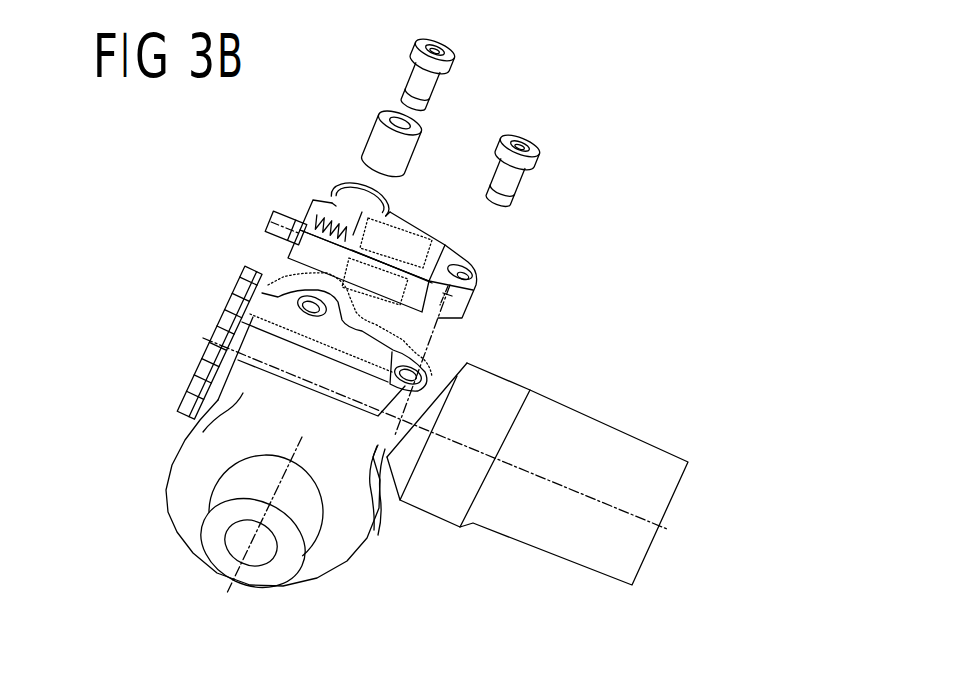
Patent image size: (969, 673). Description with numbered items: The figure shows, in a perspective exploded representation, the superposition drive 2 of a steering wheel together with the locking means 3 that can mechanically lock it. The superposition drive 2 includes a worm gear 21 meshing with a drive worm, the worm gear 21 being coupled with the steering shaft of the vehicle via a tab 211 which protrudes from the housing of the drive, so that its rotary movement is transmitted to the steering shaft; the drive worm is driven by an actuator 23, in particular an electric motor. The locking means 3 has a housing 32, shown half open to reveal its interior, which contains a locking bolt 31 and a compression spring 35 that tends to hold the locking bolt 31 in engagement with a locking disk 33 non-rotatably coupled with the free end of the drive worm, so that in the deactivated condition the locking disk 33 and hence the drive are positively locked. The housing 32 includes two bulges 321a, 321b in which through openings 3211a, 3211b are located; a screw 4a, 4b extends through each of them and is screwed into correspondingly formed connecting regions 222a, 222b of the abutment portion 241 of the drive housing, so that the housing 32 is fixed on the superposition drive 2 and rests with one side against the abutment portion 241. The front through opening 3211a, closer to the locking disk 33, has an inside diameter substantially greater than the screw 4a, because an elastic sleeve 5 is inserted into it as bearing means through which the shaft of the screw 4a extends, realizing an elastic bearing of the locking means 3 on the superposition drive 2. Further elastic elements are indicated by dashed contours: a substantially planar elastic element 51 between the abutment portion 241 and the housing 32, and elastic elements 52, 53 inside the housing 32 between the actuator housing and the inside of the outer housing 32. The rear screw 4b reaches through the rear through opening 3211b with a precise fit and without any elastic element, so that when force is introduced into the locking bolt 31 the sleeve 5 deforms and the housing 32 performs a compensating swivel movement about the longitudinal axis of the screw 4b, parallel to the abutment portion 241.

The superposition drive 2 is at (410, 540).
The worm gear 21 is at (177, 495).
The tab 211 is at (297, 550).
The actuator 23 is at (572, 432).
The connecting region 222a is at (290, 297).
The connecting region 222b is at (428, 380).
The abutment portion 241 is at (360, 368).
The locking means 3 is at (496, 260).
The locking bolt 31 is at (280, 213).
The housing 32 is at (450, 253).
The bulge 321a is at (390, 212).
The bulge 321b is at (460, 302).
The through opening 3211a is at (347, 188).
The through opening 3211b is at (467, 275).
The locking disk 33 is at (232, 322).
The compression spring 35 is at (318, 202).
The screw 4a is at (450, 45).
The screw 4b is at (532, 153).
The elastic sleeve 5 is at (417, 148).
The elastic element 51 is at (385, 336).
The elastic element 52 is at (362, 275).
The elastic element 53 is at (398, 237).